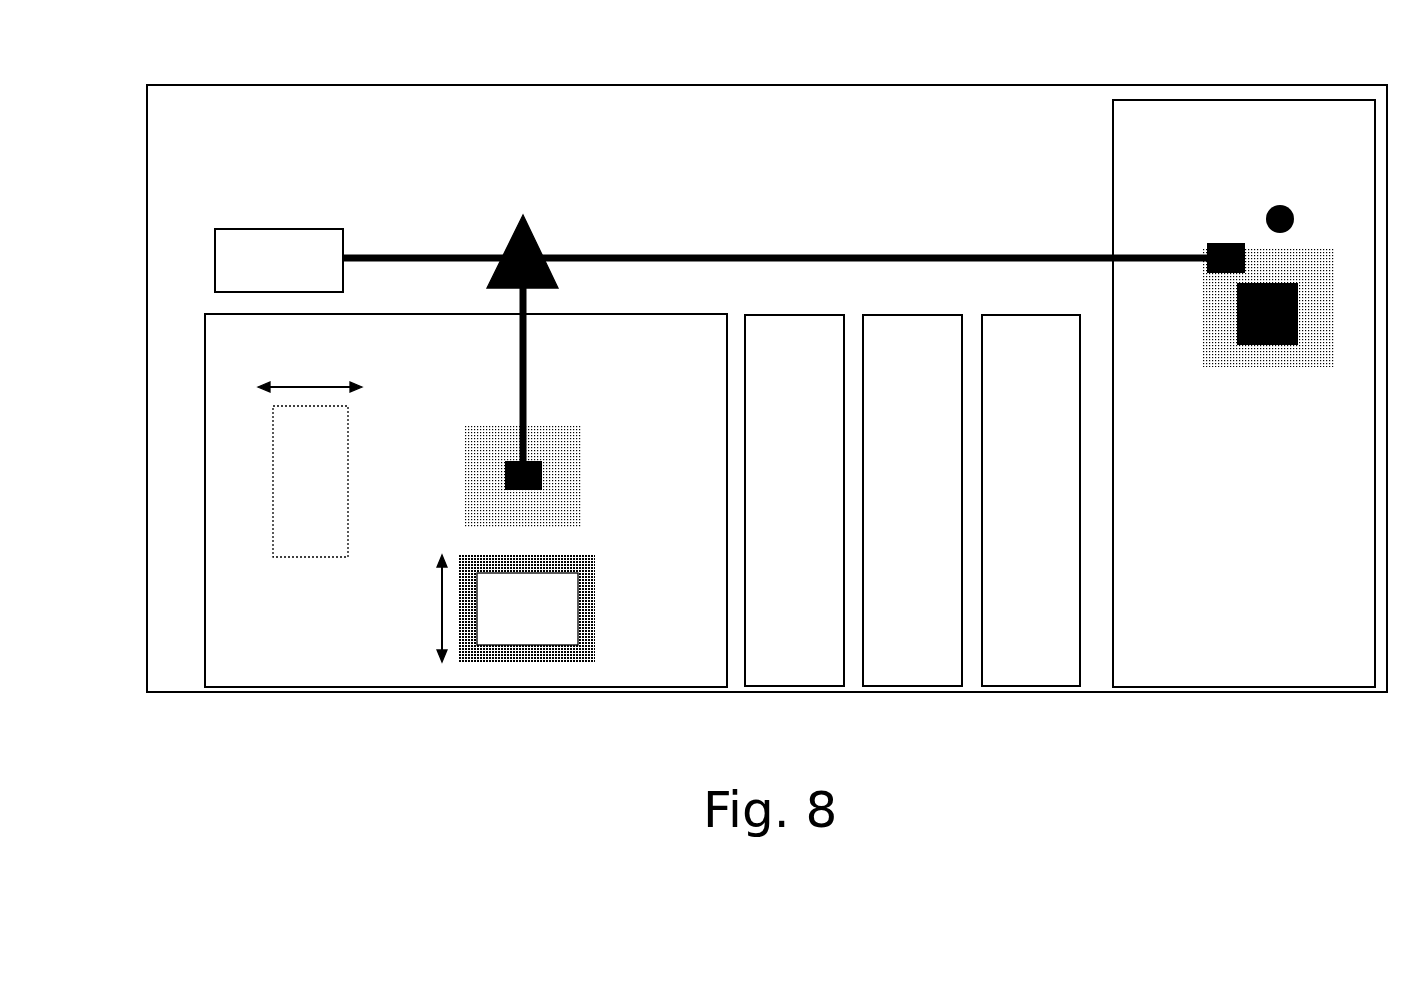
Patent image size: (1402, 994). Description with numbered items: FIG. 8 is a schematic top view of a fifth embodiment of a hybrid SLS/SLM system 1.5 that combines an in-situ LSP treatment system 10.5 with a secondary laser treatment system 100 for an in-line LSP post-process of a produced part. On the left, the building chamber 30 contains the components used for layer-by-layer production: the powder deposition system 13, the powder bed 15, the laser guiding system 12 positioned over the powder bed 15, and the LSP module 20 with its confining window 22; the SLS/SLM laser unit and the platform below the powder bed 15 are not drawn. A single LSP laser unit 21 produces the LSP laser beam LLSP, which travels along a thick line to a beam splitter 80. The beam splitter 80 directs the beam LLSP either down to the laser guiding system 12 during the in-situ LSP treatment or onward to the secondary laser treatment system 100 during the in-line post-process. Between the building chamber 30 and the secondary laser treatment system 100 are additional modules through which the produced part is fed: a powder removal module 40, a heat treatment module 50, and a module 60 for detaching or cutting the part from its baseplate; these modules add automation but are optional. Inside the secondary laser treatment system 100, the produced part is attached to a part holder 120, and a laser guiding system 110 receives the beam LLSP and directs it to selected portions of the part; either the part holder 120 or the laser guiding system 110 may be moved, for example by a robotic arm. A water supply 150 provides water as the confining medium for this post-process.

The hybrid SLS/SLM system 1.5 is at (210, 131).
The in-situ LSP treatment system 10.5 is at (340, 206).
The LSP laser unit 21 is at (267, 237).
The LSP laser beam LLSP is at (412, 253).
The beam splitter 80 is at (528, 227).
The building chamber 30 is at (257, 661).
The powder deposition system 13 is at (285, 451).
The powder bed 15 is at (570, 443).
The laser guiding system 12 is at (503, 482).
The LSP module 20 is at (601, 590).
The confining window 22 is at (516, 633).
The powder removal module 40 is at (807, 661).
The heat treatment module 50 is at (925, 661).
The part detachment/cutting module 60 is at (1042, 661).
The secondary laser treatment system 100 is at (1352, 661).
The part holder 120 is at (1318, 355).
The laser guiding system 110 is at (1227, 243).
The water supply 150 is at (1288, 210).